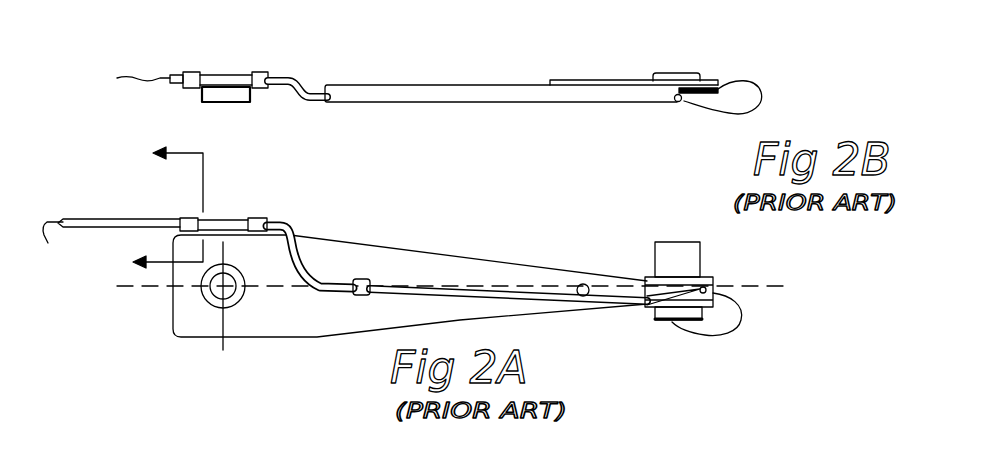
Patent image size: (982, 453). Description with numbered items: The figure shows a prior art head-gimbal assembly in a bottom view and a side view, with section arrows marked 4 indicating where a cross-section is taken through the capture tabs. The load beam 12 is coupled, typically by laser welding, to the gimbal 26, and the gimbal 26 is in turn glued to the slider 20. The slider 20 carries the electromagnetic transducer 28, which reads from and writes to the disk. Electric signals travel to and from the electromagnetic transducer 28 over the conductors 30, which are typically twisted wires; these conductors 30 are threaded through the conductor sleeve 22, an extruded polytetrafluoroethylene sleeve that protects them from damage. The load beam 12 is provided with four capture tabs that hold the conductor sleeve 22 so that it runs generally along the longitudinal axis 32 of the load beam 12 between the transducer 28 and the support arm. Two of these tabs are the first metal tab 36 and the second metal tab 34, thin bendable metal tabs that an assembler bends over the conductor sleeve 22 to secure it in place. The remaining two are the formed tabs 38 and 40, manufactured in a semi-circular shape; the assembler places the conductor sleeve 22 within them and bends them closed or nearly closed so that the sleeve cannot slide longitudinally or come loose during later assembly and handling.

In FIG. 2A, the section line 4- 4 is at (151, 208).
In FIG. 2B, the load beam 12 is at (488, 96).
In FIG. 2A, the load beam 12 is at (272, 338).
In FIG. 2B, the slider 20 is at (698, 78).
In FIG. 2A, the slider 20 is at (647, 308).
In FIG. 2B, the conductor sleeve 22 is at (303, 102).
In FIG. 2A, the conductor sleeve 22 is at (110, 219).
In FIG. 2B, the gimbal 26 is at (627, 80).
In FIG. 2A, the gimbal 26 is at (700, 259).
In FIG. 2A, the electromagnetic transducer 28 is at (663, 322).
In FIG. 2B, the conductors 30 is at (761, 101).
In FIG. 2A, the conductors 30 is at (742, 325).
In FIG. 2A, the longitudinal axis 32 is at (136, 286).
In FIG. 2B, the second metal tab 34 is at (646, 103).
In FIG. 2A, the second metal tab 34 is at (652, 277).
In FIG. 2A, the first metal tab 36 is at (368, 281).
In FIG. 2B, the formed tab 38 is at (190, 72).
In FIG. 2A, the formed tab 38 is at (186, 218).
In FIG. 2B, the formed tab 40 is at (260, 72).
In FIG. 2A, the formed tab 40 is at (258, 218).